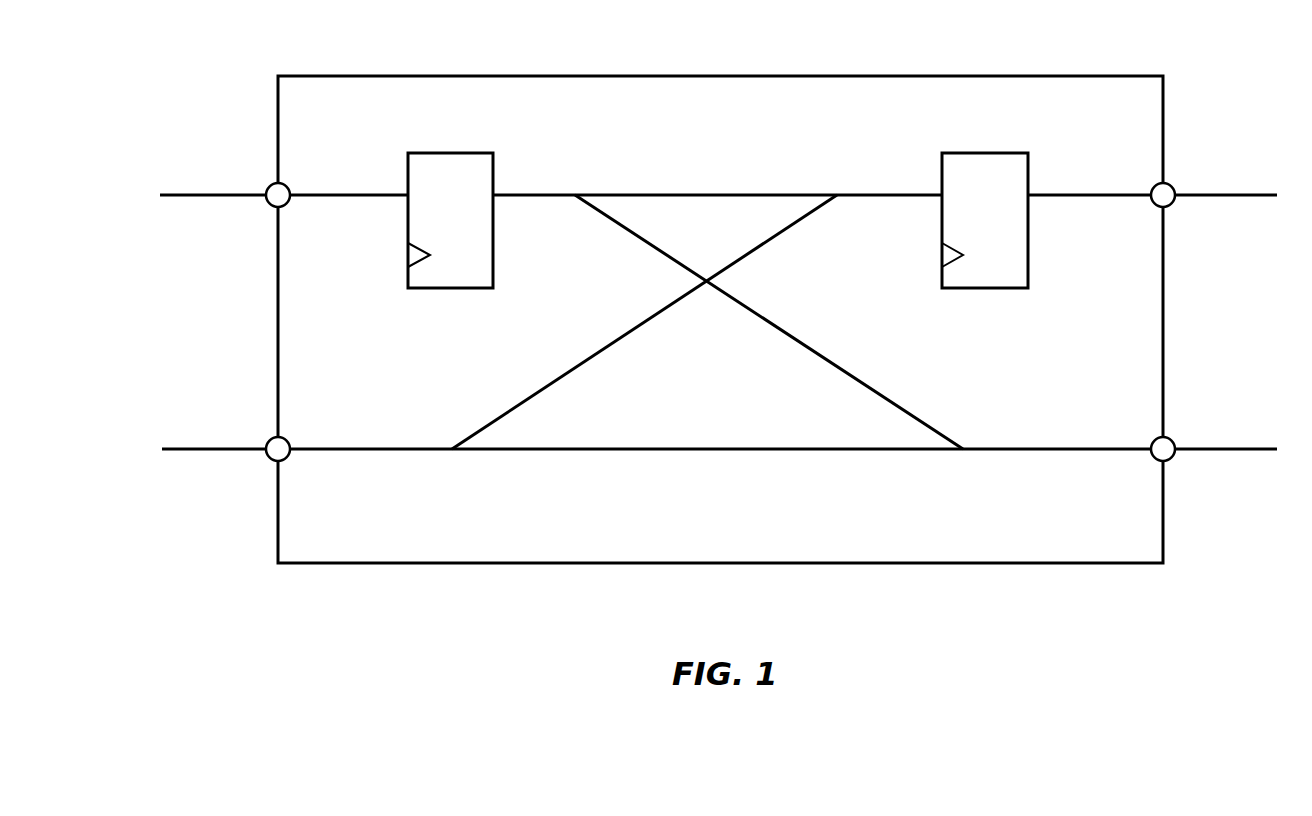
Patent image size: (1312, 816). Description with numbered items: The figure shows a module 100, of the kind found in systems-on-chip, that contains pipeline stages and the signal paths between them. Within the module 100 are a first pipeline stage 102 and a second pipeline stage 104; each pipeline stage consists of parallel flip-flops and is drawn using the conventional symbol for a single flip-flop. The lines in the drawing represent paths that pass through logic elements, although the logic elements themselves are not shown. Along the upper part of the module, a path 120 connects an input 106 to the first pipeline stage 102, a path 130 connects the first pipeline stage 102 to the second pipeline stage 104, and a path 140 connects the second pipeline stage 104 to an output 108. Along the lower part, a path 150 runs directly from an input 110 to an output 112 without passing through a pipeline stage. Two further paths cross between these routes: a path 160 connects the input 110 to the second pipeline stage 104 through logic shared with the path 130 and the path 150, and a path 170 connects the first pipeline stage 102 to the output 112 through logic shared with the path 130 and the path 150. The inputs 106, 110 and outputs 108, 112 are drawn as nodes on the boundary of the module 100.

The module 100 is at (720, 75).
The first pipeline stage 102 is at (455, 152).
The second pipeline stage 104 is at (990, 152).
The input 106 is at (270, 186).
The output 108 is at (1172, 186).
The input 110 is at (268, 460).
The output 112 is at (1172, 459).
The path 120 is at (308, 197).
The path 130 is at (682, 193).
The path 140 is at (1063, 197).
The path 150 is at (682, 451).
The path 160 is at (593, 351).
The path 170 is at (822, 351).